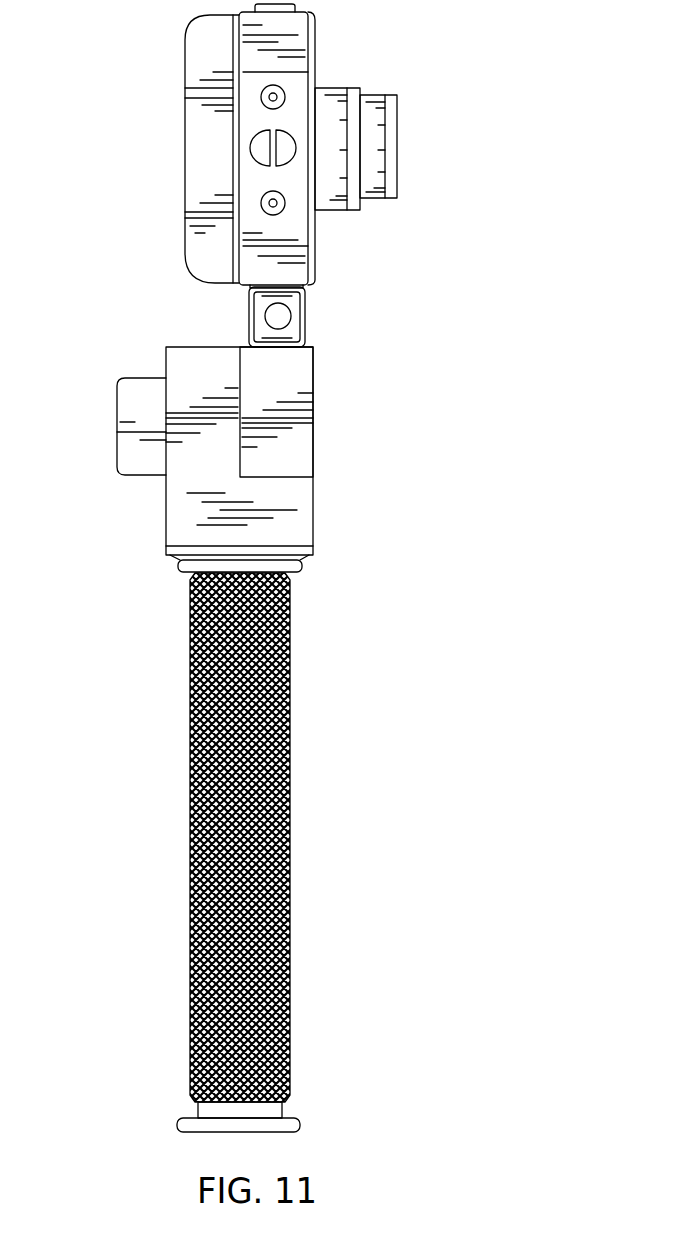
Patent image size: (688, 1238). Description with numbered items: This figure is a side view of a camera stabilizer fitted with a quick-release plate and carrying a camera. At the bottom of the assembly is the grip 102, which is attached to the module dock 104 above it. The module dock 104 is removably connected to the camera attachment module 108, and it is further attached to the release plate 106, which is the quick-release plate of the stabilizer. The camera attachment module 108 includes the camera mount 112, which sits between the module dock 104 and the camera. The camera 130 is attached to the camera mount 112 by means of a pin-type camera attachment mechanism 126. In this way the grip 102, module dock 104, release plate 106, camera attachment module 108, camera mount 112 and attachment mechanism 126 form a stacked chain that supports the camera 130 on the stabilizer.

The grip 102 is at (291, 790).
The module dock 104 is at (314, 522).
The release plate 106 is at (117, 413).
The camera attachment module 108 is at (314, 417).
The camera mount 112 is at (250, 315).
The camera attachment mechanism 126 is at (290, 315).
The camera 130 is at (186, 163).